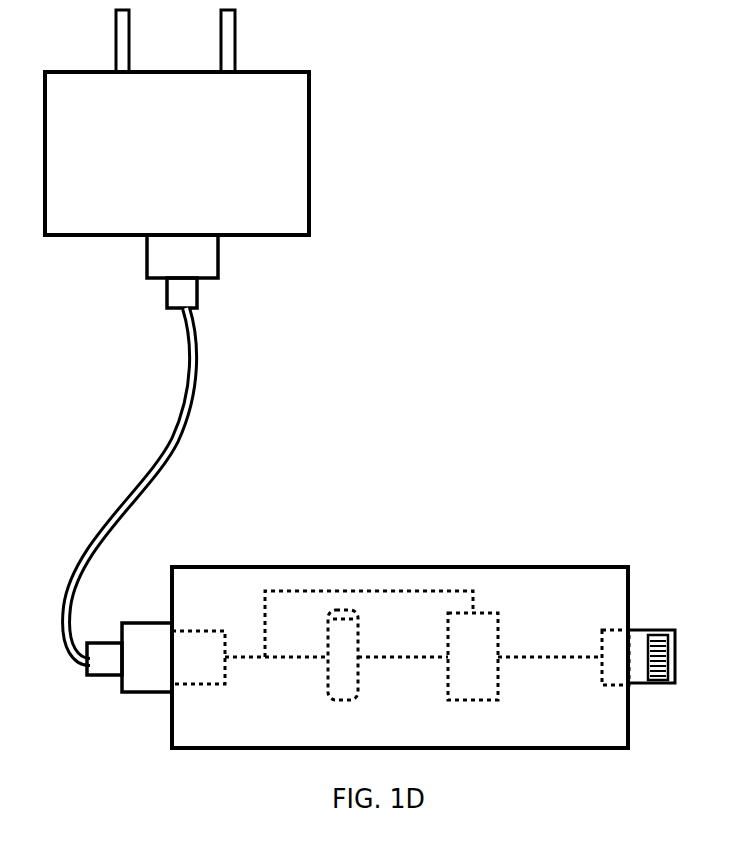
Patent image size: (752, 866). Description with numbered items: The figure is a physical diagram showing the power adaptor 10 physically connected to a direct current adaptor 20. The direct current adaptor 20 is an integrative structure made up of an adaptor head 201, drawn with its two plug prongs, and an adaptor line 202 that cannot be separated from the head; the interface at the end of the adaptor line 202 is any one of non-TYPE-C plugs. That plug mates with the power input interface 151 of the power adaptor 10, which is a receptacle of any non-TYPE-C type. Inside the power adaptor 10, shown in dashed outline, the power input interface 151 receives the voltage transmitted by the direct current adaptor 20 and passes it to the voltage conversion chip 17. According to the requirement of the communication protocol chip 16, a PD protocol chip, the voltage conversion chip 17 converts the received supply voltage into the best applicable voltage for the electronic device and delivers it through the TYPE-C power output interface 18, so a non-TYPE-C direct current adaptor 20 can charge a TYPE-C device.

The power adaptor 10 is at (387, 620).
The communication protocol chip 16 is at (448, 684).
The voltage conversion chip 17 is at (328, 687).
The power output interface 18 is at (633, 630).
The power input interface 151 is at (198, 684).
The direct current adaptor 20 is at (282, 336).
The adaptor head 201 is at (309, 143).
The adaptor line 202 is at (193, 392).